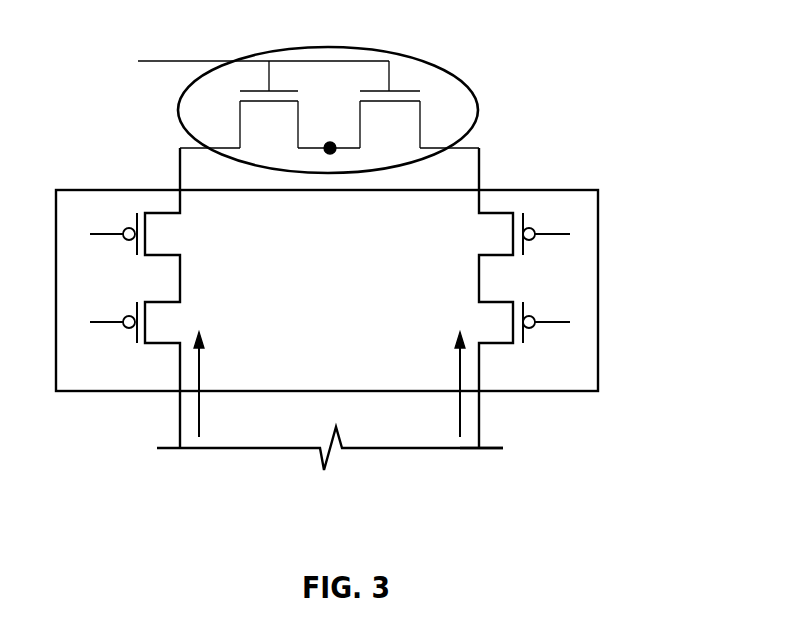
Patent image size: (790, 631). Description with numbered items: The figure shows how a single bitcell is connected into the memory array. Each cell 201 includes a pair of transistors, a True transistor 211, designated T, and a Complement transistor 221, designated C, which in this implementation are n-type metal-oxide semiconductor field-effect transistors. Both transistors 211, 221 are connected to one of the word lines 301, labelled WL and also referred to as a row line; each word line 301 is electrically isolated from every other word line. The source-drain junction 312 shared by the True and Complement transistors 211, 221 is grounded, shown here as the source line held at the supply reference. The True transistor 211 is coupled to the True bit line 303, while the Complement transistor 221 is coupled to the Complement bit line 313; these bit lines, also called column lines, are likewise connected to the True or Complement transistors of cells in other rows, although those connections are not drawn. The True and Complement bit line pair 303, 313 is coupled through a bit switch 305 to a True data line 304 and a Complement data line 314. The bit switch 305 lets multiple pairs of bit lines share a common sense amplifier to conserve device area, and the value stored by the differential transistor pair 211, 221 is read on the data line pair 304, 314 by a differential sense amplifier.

The cell 201 is at (430, 62).
The word line 301 is at (158, 61).
The True transistor 211 is at (240, 130).
The Complement transistor 221 is at (418, 115).
The source-drain junction 312 is at (331, 142).
The True bit line 303 is at (178, 157).
The Complement bit line 313 is at (480, 156).
The bit switch 305 is at (598, 280).
The True data line 304 is at (178, 437).
The Complement data line 314 is at (480, 432).